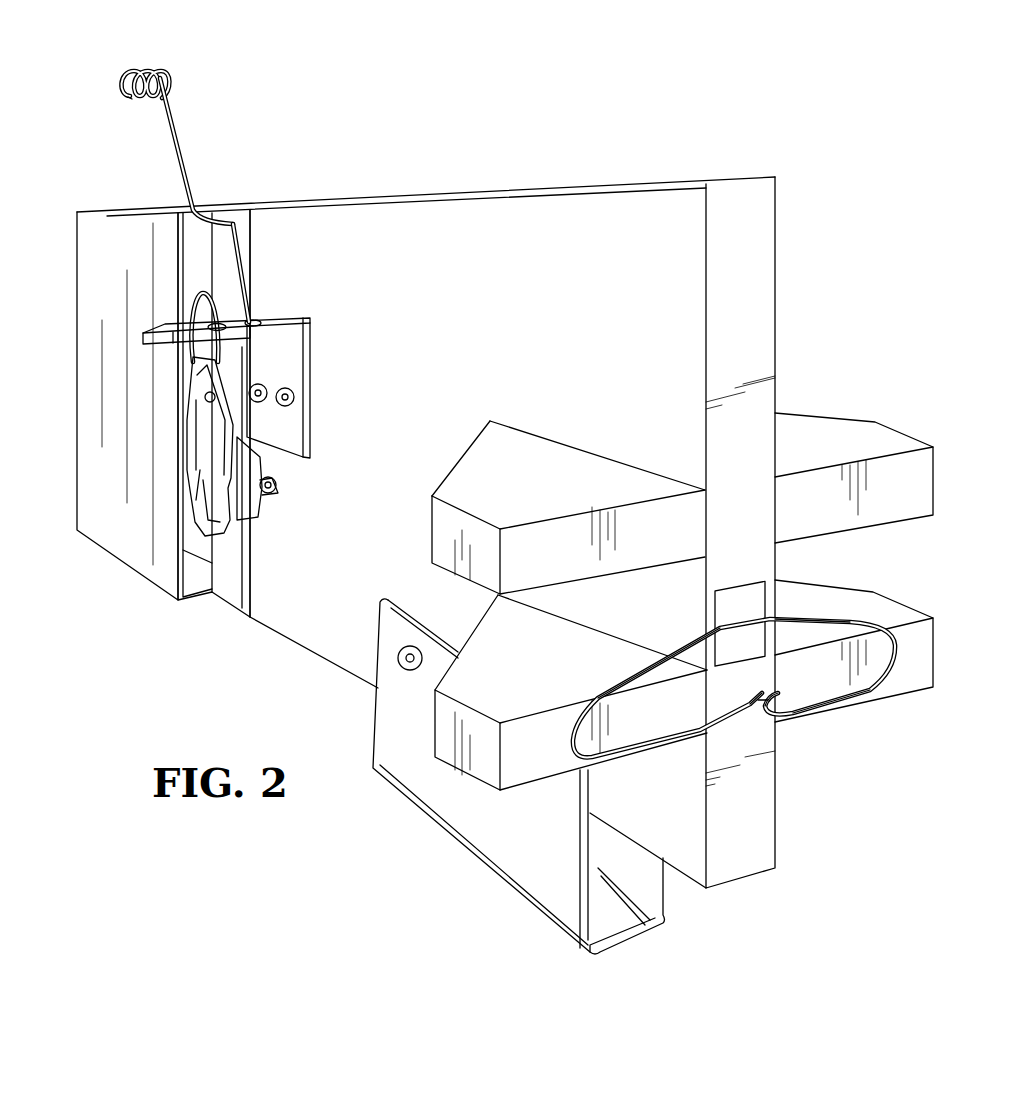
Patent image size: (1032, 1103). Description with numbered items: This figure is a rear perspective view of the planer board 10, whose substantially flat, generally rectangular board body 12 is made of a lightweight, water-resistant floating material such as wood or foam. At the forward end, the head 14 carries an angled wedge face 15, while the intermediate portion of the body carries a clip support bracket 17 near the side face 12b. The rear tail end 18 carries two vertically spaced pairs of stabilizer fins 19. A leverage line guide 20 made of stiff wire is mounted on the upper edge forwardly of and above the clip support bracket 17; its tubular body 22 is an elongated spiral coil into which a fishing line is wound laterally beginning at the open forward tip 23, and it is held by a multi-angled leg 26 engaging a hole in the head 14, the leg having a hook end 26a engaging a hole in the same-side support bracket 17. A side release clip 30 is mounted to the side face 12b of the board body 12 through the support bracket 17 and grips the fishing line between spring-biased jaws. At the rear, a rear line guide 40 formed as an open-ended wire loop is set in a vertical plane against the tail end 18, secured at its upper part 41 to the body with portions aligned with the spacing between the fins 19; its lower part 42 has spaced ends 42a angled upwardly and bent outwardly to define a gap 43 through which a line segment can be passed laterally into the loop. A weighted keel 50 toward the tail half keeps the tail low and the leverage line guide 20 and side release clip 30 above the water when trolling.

The planer board 10 is at (507, 126).
The board body 12 is at (637, 184).
The side face of body 12b is at (393, 247).
The head 14 is at (72, 230).
The angled wedge face 15 is at (100, 470).
The clip support bracket 17 is at (290, 362).
The tail end 18 is at (748, 237).
The stabilizer fins 19 is at (887, 478).
The leverage line guide 20 is at (191, 97).
The tubular body 22 is at (167, 62).
The tip 23 is at (130, 98).
The multi-angled leg 26 is at (190, 172).
The hook end 26a is at (258, 350).
The side release clip 30 is at (176, 477).
The rear line guide 40 is at (900, 637).
The upper part 41 is at (820, 610).
The lower part 42 is at (843, 707).
The spaced ends 42a is at (783, 712).
The gap 43 is at (755, 719).
The weighted keel 50 is at (552, 887).